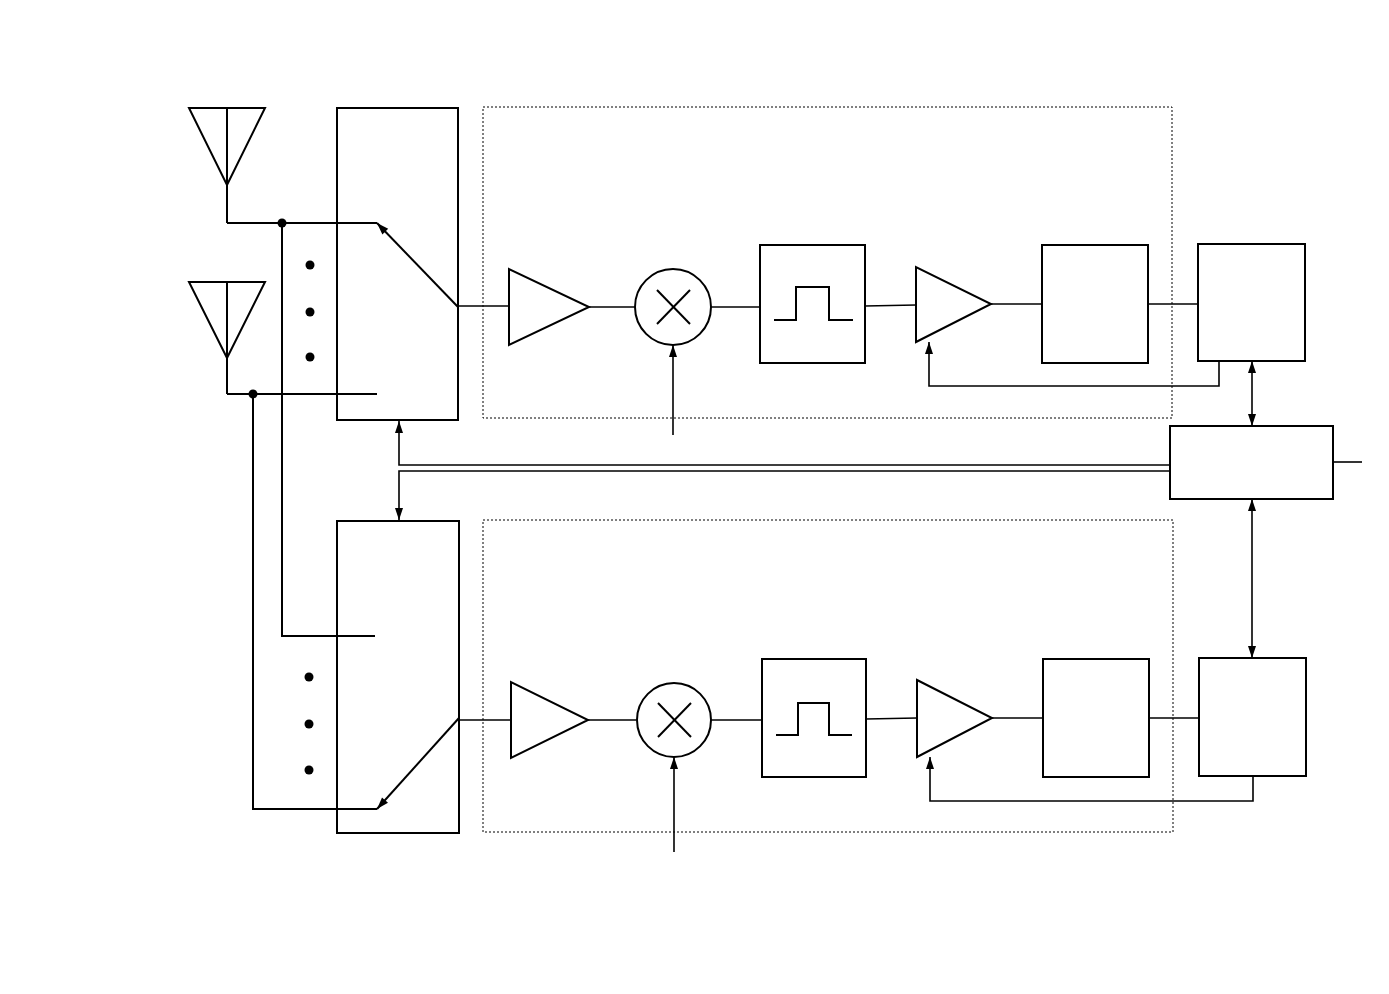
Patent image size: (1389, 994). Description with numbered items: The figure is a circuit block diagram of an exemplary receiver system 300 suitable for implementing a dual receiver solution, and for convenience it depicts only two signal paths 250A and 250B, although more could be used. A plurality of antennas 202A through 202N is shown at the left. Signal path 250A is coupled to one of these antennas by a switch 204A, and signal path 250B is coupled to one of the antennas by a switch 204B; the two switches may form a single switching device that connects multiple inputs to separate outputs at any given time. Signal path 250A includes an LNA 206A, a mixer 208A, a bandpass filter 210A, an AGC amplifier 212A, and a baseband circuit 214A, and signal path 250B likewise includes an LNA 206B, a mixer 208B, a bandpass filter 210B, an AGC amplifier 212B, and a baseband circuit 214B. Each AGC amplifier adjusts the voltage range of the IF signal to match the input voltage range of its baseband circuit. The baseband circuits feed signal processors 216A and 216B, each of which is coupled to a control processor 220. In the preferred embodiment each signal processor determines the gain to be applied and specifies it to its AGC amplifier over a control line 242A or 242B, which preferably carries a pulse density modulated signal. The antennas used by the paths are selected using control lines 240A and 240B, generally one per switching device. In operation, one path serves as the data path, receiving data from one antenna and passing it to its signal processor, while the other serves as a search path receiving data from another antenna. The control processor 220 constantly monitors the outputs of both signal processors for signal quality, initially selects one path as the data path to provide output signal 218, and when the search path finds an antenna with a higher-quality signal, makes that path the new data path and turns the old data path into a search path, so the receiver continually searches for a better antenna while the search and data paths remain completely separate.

The receiver system 300 is at (1277, 66).
The antenna 202A is at (217, 107).
The antenna 202N is at (217, 281).
The switch 204A is at (397, 107).
The switch 204B is at (445, 520).
The LNA 206A is at (572, 252).
The LNA 206B is at (575, 667).
The mixer 208A is at (672, 268).
The mixer 208B is at (674, 682).
The bandpass filter 210A is at (816, 244).
The bandpass filter 210B is at (816, 658).
The AGC amplifier 212A is at (977, 248).
The AGC amplifier 212B is at (978, 662).
The baseband circuit 214A is at (1092, 244).
The baseband circuit 214B is at (1095, 658).
The signal processor 216A is at (1250, 243).
The signal processor 216B is at (1294, 657).
The output signal 218 is at (1347, 461).
The control processor 220 is at (1312, 425).
The control line 240A is at (812, 465).
The control line 240B is at (783, 471).
The control line 242A is at (965, 385).
The control line 242B is at (967, 800).
The signal path 250A is at (1052, 152).
The signal path 250B is at (1054, 566).